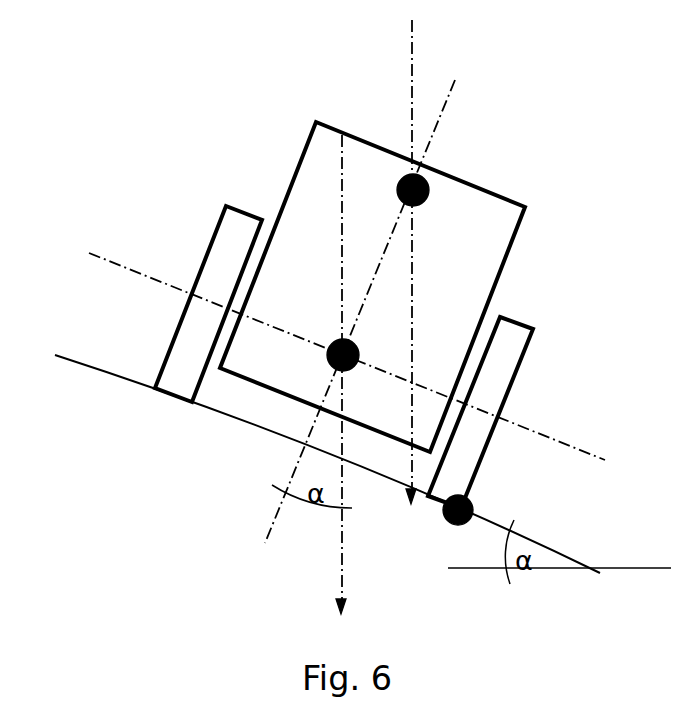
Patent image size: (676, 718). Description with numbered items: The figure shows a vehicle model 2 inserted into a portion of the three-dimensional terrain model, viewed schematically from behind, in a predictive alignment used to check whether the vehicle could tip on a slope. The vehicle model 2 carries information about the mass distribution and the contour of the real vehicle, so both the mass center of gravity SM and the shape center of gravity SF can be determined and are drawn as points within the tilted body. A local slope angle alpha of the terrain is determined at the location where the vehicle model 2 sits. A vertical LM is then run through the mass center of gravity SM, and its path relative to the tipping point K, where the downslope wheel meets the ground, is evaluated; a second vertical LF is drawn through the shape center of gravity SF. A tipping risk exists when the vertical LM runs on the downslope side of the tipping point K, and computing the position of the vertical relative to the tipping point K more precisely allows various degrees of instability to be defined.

The vehicle model 2 is at (180, 226).
The vertical line through front pivot point LF is at (429, 262).
The vertical LM is at (326, 374).
The shape center of gravity SF is at (428, 198).
The mass center of gravity SM is at (330, 360).
The tipping point K is at (472, 510).